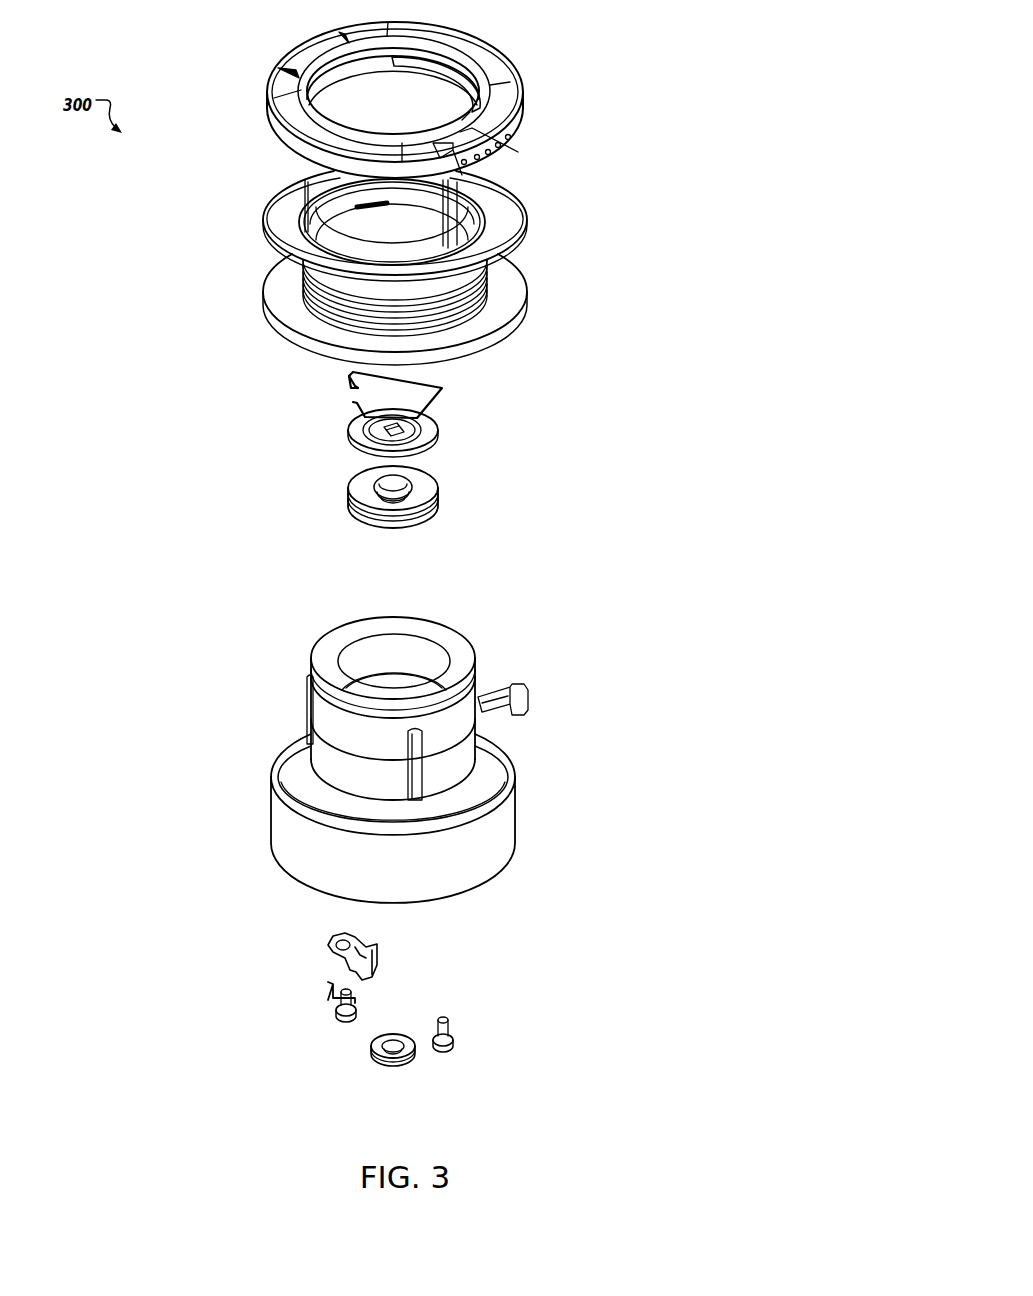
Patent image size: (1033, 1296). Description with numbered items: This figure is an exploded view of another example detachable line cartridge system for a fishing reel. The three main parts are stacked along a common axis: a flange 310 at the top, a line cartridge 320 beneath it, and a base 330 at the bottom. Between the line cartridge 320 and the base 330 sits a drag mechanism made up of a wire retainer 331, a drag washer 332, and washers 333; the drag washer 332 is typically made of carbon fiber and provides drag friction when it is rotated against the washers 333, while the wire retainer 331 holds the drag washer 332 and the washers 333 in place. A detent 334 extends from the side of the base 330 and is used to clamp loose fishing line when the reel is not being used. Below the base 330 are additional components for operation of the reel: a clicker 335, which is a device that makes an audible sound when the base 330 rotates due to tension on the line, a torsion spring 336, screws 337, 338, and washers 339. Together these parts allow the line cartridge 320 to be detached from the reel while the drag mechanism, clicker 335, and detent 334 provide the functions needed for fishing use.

The flange 310 is at (525, 140).
The line cartridge 320 is at (266, 292).
The base 330 is at (514, 853).
The wire retainer 331 is at (371, 390).
The drag washer 332 is at (347, 433).
The washers 333 is at (446, 514).
The detent 334 is at (534, 707).
The clicker 335 is at (326, 945).
The torsion spring 336 is at (328, 995).
The screw 337 is at (343, 1031).
The screw 338 is at (453, 1020).
The washers 339 is at (414, 1068).